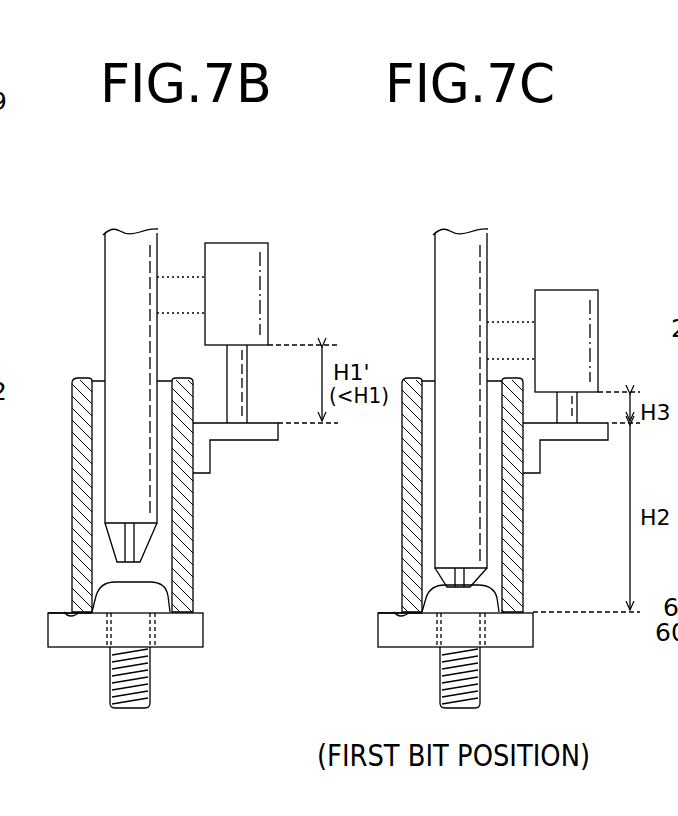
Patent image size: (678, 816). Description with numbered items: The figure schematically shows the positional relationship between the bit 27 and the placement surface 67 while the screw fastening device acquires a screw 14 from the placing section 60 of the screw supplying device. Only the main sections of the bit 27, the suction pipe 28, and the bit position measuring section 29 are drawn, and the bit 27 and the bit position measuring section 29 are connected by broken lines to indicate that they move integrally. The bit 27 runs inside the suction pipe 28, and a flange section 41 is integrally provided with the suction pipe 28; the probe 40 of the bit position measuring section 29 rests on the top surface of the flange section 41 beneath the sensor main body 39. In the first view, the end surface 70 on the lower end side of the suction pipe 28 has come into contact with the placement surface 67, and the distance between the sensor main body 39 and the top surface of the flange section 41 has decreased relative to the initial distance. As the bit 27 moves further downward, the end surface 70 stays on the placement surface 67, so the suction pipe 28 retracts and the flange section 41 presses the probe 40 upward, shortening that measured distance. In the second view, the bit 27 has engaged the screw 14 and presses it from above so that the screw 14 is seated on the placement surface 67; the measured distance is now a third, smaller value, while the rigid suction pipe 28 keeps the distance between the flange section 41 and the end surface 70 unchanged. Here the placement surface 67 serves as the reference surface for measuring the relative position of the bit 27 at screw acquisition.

In FIG. 7B, the screw 14 is at (168, 597).
In FIG. 7C, the screw 14 is at (498, 597).
In FIG. 7B, the bit 27 is at (105, 297).
In FIG. 7C, the bit 27 is at (435, 297).
In FIG. 7B, the suction pipe 28 is at (72, 433).
In FIG. 7C, the suction pipe 28 is at (402, 433).
In FIG. 7B, the bit position measuring section 29 is at (283, 240).
In FIG. 7C, the bit position measuring section 29 is at (598, 262).
In FIG. 7B, the sensor main body 39 is at (268, 293).
In FIG. 7C, the sensor main body 39 is at (598, 353).
In FIG. 7B, the probe 40 is at (247, 378).
In FIG. 7C, the probe 40 is at (577, 419).
In FIG. 7B, the flange section 41 is at (255, 441).
In FIG. 7C, the flange section 41 is at (585, 441).
In FIG. 7B, the placing section 60 is at (48, 628).
In FIG. 7C, the placing section 60 is at (378, 628).
In FIG. 7B, the placement surface 67 is at (63, 612).
In FIG. 7C, the placement surface 67 is at (393, 612).
In FIG. 7B, the end surface 70 is at (72, 614).
In FIG. 7C, the end surface 70 is at (402, 614).